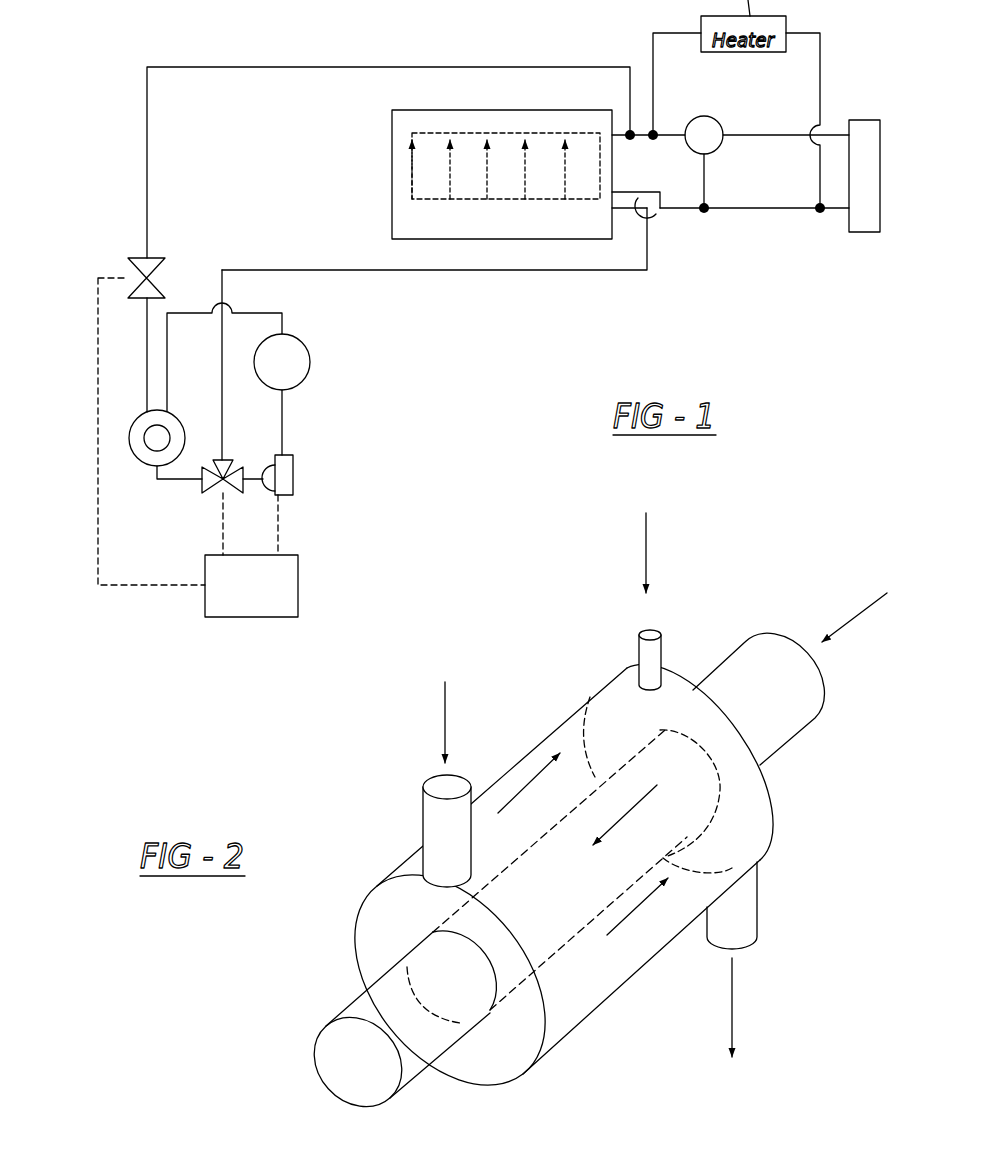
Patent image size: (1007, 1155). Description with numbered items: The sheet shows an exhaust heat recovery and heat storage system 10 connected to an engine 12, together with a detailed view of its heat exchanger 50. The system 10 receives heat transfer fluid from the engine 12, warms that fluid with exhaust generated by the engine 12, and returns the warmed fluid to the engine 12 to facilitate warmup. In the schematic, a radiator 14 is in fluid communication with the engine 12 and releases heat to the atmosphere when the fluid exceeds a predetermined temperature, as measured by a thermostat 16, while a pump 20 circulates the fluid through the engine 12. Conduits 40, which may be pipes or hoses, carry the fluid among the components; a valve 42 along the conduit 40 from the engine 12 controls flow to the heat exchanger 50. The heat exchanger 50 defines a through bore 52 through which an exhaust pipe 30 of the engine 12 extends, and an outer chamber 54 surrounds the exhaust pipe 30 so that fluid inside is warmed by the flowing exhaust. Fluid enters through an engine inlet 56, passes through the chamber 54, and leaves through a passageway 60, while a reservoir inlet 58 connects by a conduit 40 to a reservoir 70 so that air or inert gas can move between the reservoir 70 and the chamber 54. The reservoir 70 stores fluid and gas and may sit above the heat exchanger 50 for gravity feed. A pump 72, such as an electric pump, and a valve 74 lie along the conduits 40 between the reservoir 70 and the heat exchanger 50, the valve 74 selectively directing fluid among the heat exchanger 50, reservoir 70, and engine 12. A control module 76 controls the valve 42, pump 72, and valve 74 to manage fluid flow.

In FIG. 1, the exhaust heat recovery and heat storage system 10 is at (90, 394).
In FIG. 1, the engine 12 is at (392, 157).
In FIG. 1, the radiator 14 is at (868, 120).
In FIG. 1, the thermostat 16 is at (718, 120).
In FIG. 1, the pump 20 is at (660, 220).
In FIG. 1, the exhaust pipe 30 is at (176, 432).
In FIG. 2, the exhaust pipe 30 is at (322, 1073).
In FIG. 1, the conduits 40 is at (270, 68).
In FIG. 1, the valve 42 is at (130, 258).
In FIG. 1, the heat exchanger 50 is at (145, 420).
In FIG. 2, the heat exchanger 50 is at (520, 672).
In FIG. 2, the through bore 52 is at (490, 982).
In FIG. 2, the outer chamber 54 is at (382, 920).
In FIG. 2, the engine inlet 56 is at (437, 785).
In FIG. 2, the reservoir inlet 58 is at (652, 632).
In FIG. 2, the passageway 60 is at (740, 917).
In FIG. 1, the reservoir 70 is at (310, 348).
In FIG. 1, the pump 72 is at (295, 487).
In FIG. 1, the valve 74 is at (207, 503).
In FIG. 1, the control module 76 is at (245, 617).